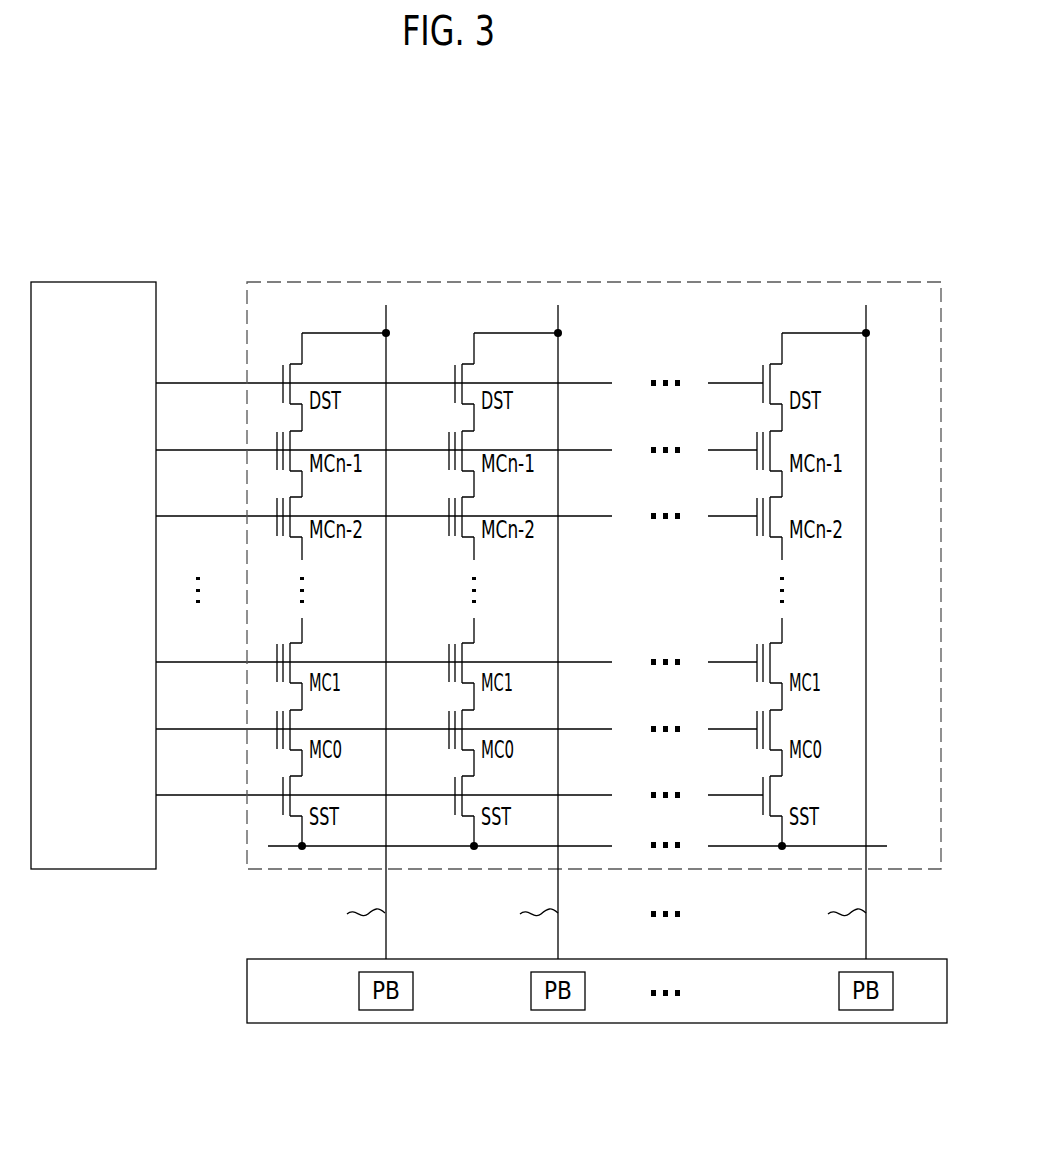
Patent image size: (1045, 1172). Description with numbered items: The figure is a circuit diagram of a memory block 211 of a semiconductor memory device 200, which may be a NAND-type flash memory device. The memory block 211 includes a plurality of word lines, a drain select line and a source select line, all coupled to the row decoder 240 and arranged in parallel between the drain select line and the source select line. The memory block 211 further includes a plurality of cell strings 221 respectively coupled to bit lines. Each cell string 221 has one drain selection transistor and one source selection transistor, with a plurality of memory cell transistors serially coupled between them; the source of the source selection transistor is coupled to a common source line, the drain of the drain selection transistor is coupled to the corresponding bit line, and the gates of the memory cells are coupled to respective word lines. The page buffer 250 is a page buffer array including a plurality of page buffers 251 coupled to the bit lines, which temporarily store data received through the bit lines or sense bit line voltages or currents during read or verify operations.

The semiconductor memory device 200 is at (913, 182).
The memory block 211 is at (826, 281).
The cell string 221 is at (290, 326).
The row decoder 240 is at (94, 281).
The page buffer 250 is at (561, 991).
The page buffer 251 is at (359, 991).